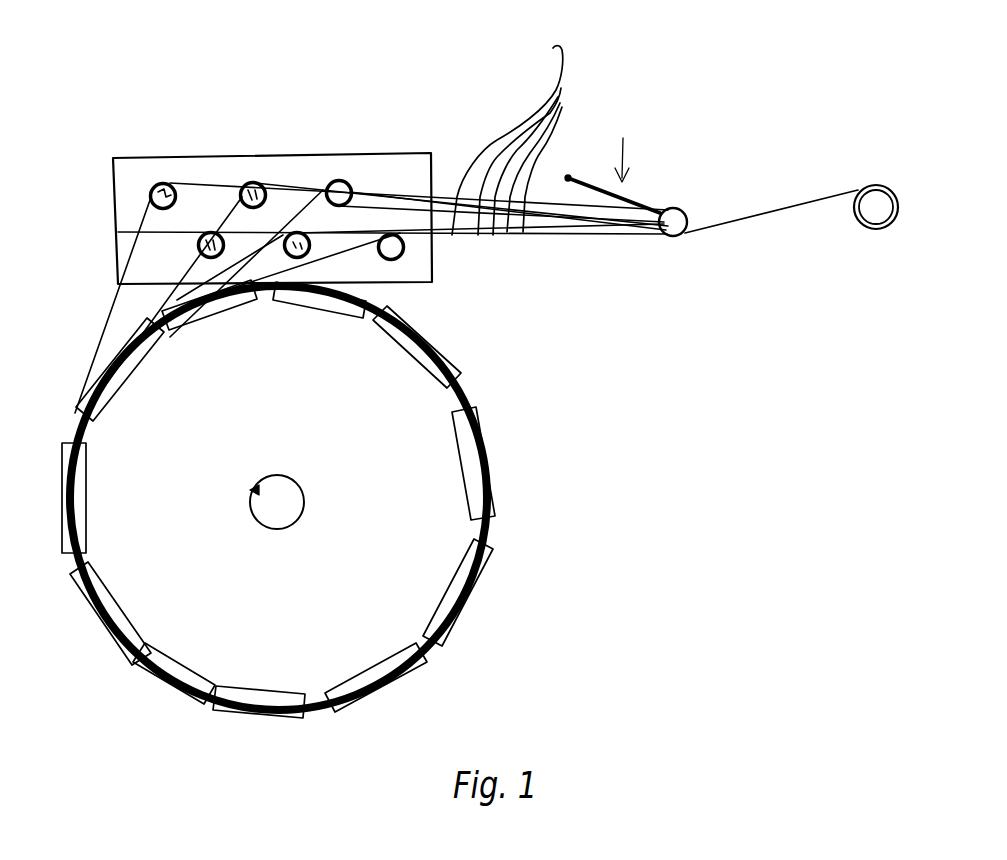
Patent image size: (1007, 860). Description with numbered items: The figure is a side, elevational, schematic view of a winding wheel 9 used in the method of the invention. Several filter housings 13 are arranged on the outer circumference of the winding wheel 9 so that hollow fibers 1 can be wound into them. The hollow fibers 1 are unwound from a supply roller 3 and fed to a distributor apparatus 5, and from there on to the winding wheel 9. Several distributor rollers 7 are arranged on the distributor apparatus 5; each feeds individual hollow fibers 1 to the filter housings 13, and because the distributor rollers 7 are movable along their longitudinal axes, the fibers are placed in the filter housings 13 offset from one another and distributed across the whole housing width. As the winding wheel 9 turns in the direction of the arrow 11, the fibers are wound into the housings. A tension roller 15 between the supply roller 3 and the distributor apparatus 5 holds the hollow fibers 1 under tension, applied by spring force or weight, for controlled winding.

The hollow fibers 1 is at (546, 60).
The supply roller 3 is at (897, 193).
The distributor apparatus 5 is at (398, 155).
The distributor rollers 7 is at (165, 183).
The winding wheel 9 is at (430, 425).
The arrow 11 is at (304, 503).
The filter housings 13 is at (497, 500).
The tension roller 15 is at (677, 207).